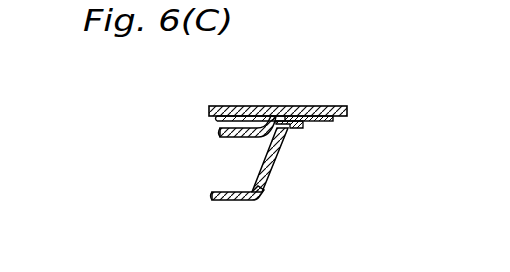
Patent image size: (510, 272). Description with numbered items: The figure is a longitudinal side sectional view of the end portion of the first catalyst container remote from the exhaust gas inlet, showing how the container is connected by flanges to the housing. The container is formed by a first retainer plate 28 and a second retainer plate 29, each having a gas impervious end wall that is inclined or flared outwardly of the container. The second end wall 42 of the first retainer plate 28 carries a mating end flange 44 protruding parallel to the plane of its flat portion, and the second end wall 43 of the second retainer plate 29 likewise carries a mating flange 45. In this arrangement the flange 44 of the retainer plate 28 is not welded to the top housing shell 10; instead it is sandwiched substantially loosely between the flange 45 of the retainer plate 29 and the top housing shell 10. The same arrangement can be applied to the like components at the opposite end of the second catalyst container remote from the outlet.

The top housing shell 10 is at (242, 106).
The second end wall 42 is at (217, 118).
The mating end flange 44 is at (281, 107).
The mating flange 45 is at (306, 126).
The first retainer plate 28 is at (238, 139).
The second end wall 43 is at (277, 170).
The second retainer plate 29 is at (214, 199).